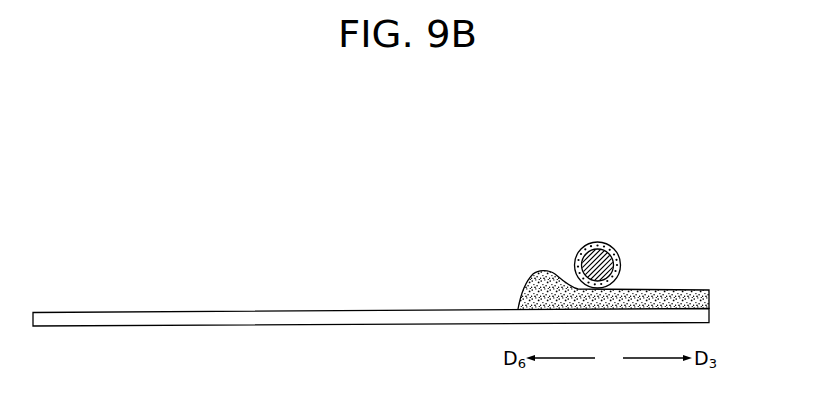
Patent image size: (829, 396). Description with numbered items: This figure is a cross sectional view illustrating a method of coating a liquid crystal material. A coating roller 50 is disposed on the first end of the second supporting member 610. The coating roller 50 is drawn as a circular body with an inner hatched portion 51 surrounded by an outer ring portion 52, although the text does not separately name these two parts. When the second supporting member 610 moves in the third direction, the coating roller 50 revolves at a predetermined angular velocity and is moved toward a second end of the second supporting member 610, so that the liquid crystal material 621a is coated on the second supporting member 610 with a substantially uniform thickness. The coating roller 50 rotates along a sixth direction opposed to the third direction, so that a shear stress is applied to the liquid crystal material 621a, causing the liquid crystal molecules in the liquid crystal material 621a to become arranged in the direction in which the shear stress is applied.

The coating roller 50 is at (626, 254).
The core 51 is at (612, 268).
The cladding 52 is at (617, 256).
The liquid crystal material 621a is at (709, 292).
The second supporting member 610 is at (709, 317).